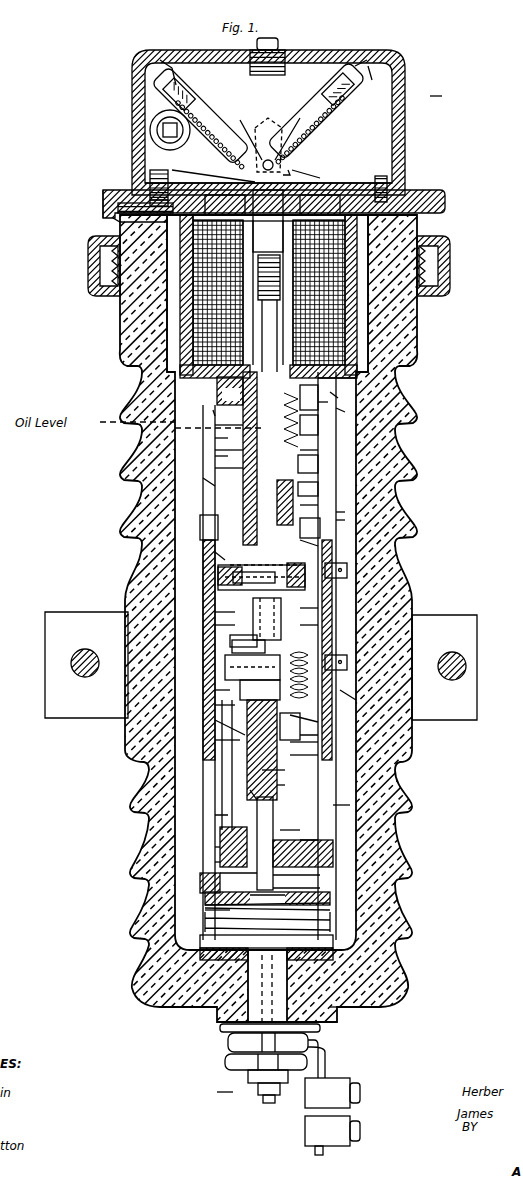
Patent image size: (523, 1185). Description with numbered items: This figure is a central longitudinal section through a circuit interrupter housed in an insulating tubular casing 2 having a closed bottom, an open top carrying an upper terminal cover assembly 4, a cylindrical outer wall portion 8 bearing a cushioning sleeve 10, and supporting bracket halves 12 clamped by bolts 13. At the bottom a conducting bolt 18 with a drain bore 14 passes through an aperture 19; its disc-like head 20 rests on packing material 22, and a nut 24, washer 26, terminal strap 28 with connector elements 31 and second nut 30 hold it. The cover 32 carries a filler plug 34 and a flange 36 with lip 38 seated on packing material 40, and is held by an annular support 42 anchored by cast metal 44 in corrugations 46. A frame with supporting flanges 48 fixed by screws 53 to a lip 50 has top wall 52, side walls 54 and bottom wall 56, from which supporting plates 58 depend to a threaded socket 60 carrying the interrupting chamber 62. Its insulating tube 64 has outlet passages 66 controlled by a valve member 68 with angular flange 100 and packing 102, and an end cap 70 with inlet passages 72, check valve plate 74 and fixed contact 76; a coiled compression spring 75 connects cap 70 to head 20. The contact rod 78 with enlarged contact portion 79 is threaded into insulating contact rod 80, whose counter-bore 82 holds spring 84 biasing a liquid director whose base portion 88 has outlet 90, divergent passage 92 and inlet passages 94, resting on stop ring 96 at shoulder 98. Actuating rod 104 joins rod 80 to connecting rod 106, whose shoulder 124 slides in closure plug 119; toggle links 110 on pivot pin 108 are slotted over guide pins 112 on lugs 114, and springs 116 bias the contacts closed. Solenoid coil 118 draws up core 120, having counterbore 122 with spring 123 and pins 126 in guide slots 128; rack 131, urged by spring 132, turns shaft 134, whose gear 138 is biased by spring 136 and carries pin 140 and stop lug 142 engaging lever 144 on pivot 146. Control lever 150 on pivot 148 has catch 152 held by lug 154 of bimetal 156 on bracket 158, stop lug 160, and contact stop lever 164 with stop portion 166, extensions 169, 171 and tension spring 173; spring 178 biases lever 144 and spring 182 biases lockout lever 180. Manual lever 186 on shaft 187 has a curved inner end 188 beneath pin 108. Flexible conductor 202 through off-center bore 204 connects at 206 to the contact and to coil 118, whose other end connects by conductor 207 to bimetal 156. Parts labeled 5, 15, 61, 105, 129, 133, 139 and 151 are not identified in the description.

The insulating tubular casing 2 is at (322, 402).
The upper terminal cover assembly 4 is at (436, 89).
The nut 5 is at (252, 1081).
The cylindrical outer wall portion 8 is at (412, 650).
The cushioning sleeve 10 is at (410, 610).
The supporting bracket halves 12 is at (462, 618).
The bolts 13 is at (77, 662).
The bore 14 is at (318, 1032).
The stud 15 is at (275, 1097).
The conducting bolt 18 is at (215, 1010).
The aperture 19 is at (328, 1020).
The disc-like head portion 20 is at (210, 928).
The packing material 22 is at (320, 932).
The nut 24 is at (308, 1042).
The washer 26 is at (225, 1030).
The terminal strap 28 is at (325, 1058).
The second nut 30 is at (226, 1062).
The connector elements 31 is at (334, 1086).
The cover 32 is at (405, 130).
The filler plug 34 is at (280, 48).
The peripheral flange portion 36 is at (105, 192).
The lip portion 38 is at (103, 205).
The packing material 40 is at (113, 222).
The support 42 is at (90, 263).
The cast metal 44 is at (100, 250).
The corrugations 46 is at (413, 240).
The supporting flanges 48 is at (145, 193).
The lip 50 is at (167, 187).
The top wall 52 is at (212, 200).
The screws 53 is at (160, 193).
The side walls 54 is at (187, 295).
The bottom wall 56 is at (230, 391).
The supporting plate members 58 is at (212, 560).
The threaded socket 60 is at (230, 740).
The link 61 is at (222, 730).
The interrupting chamber 62 is at (341, 798).
The tubular insulating chamber portion 64 is at (222, 780).
The outlet passages 66 is at (215, 705).
The disc-like valve member 68 is at (300, 722).
The end cap 70 is at (320, 888).
The passages 72 is at (215, 905).
The check valve plate 74 is at (200, 885).
The coiled compression spring 75 is at (215, 912).
The fixed contact 76 is at (320, 900).
The contact rod 78 is at (300, 830).
The enlarged contact portion 79 is at (320, 875).
The insulating contact supporting rod 80 is at (262, 755).
The counter-bore 82 is at (242, 795).
The coil compression spring 84 is at (273, 812).
The base portion 88 is at (220, 832).
The outlet 90 is at (220, 873).
The divergent passage 92 is at (320, 860).
The inlet passages 94 is at (225, 815).
The stop ring 96 is at (215, 847).
The shoulder 98 is at (215, 865).
The angular flange 100 is at (300, 742).
The packing material 102 is at (300, 755).
The actuating rod 104 is at (268, 637).
The coil 105 is at (232, 317).
The connecting rod 106 is at (320, 178).
The pivot pin 108 is at (300, 160).
The toggle links 110 is at (237, 120).
The fixed guide pins 112 is at (165, 56).
The supporting lug portions 114 is at (172, 73).
The coiled compression spring 116 is at (233, 117).
The solenoid coil 118 is at (343, 322).
The closure plug 119 is at (312, 190).
The core 120 is at (215, 456).
The counterbore portion 122 is at (213, 413).
The coil spring 123 is at (215, 438).
The shoulder 124 is at (283, 240).
The pins 126 is at (210, 515).
The guide slots 128 is at (322, 478).
The lever 129 is at (210, 480).
The rack 131 is at (215, 625).
The spring 132 is at (215, 555).
The link 133 is at (230, 641).
The shaft 134 is at (225, 588).
The spring 136 is at (312, 593).
The gear 138 is at (320, 556).
The link 139 is at (215, 612).
The pin 140 is at (318, 542).
The stop lug 142 is at (312, 610).
The lever 144 is at (312, 623).
The pivot pin 146 is at (215, 690).
The pivot 148 is at (340, 516).
The control lever 150 is at (322, 440).
The spring 151 is at (340, 521).
The curved catch 152 is at (322, 418).
The adjustable stop lug 154 is at (333, 377).
The bimetal element 156 is at (340, 410).
The angular bracket 158 is at (322, 503).
The stop lug 160 is at (322, 490).
The contact stop lever 164 is at (322, 453).
The stop portion 166 is at (322, 465).
The lateral extension 169 is at (229, 423).
The lateral extension 171 is at (229, 464).
The coiled tension spring 173 is at (229, 446).
The spring 178 is at (300, 656).
The lockout lever 180 is at (225, 660).
The spring 182 is at (285, 689).
The lever 186 is at (197, 157).
The shaft 187 is at (170, 112).
The curved inner end 188 is at (286, 176).
The flexible conductor 202 is at (357, 693).
The off center bore 204 is at (283, 772).
The connection 206 is at (296, 787).
The flexible conductor 207 is at (333, 397).